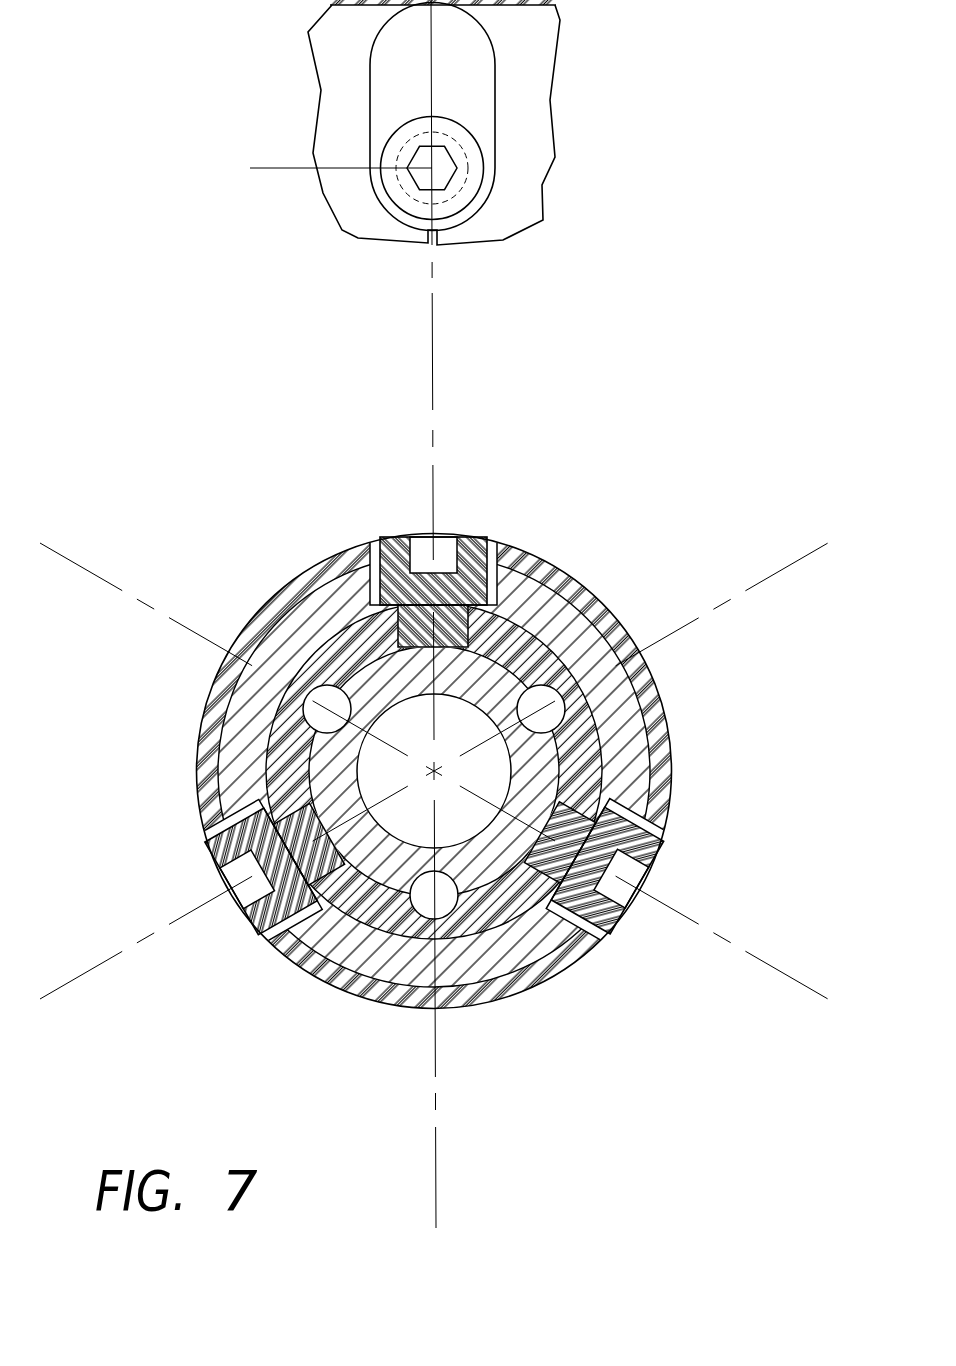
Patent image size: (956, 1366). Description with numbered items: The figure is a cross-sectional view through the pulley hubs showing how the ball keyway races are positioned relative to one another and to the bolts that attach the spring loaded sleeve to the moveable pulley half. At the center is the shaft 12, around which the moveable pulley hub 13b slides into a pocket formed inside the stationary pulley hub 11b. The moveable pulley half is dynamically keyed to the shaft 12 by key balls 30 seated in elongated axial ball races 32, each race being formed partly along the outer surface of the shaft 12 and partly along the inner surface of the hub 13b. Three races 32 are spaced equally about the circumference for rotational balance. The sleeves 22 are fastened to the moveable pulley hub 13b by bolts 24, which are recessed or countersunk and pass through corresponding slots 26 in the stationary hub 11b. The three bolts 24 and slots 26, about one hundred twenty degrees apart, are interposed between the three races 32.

The stationary pulley hub 11b is at (655, 697).
The shaft 12 is at (490, 860).
The moveable pulley hub 13b is at (478, 978).
The sleeve 22 is at (352, 205).
The bolt 24 is at (458, 200).
The slot 26 is at (480, 107).
The key ball 30 is at (327, 697).
The axial ball race 32 is at (297, 715).